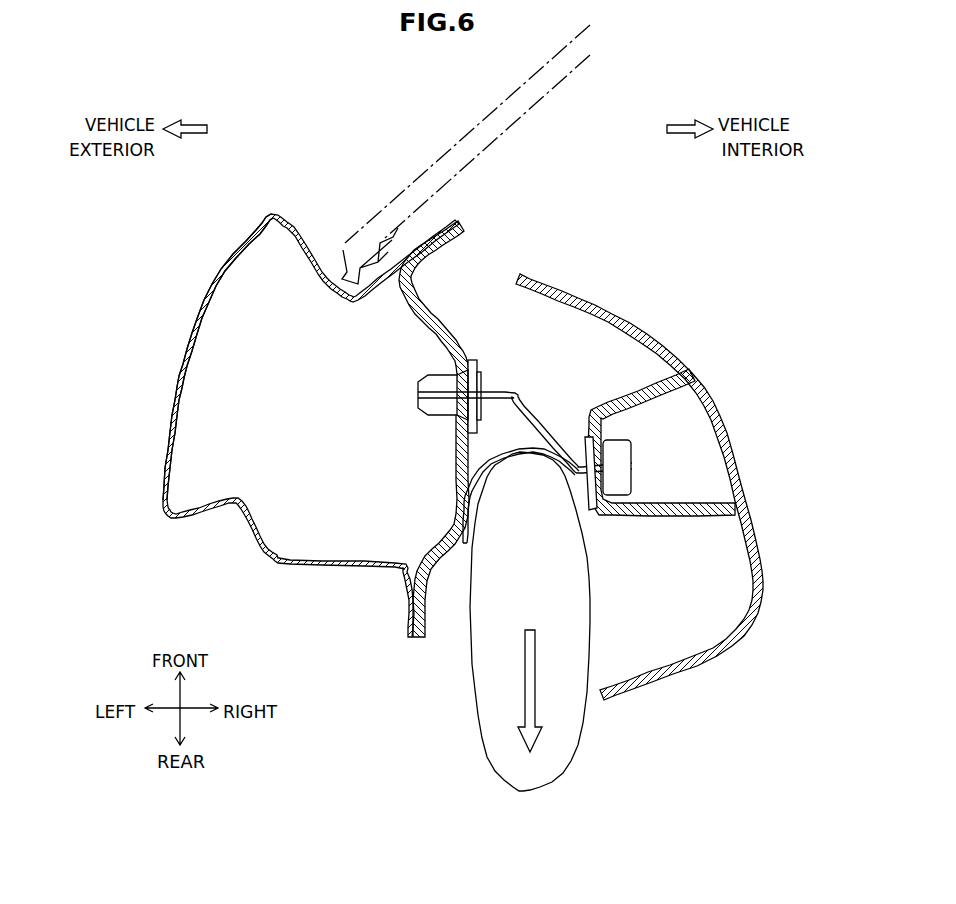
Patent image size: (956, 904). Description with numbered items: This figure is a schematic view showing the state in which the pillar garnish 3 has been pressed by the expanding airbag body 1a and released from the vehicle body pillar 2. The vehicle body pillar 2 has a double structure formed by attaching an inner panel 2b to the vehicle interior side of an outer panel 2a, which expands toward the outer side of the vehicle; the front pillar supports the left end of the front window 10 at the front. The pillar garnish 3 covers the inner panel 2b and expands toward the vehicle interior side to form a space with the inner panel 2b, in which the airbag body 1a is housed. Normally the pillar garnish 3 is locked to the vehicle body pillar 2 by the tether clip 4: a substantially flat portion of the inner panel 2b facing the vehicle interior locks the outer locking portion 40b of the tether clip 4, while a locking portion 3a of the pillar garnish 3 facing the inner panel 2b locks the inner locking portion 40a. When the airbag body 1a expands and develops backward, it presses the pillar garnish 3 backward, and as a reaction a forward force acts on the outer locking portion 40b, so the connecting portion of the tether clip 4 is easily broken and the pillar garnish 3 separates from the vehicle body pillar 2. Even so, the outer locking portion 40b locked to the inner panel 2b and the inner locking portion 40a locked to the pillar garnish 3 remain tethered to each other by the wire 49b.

The front window 10 is at (345, 243).
The vehicle body pillar 2 is at (113, 350).
The outer panel 2a is at (172, 410).
The inner panel 2b is at (453, 463).
The tether clip 4 is at (408, 371).
The outer locking portion 40b is at (431, 367).
The wire 49b is at (543, 410).
The airbag body 1a is at (485, 712).
The pillar garnish 3 is at (571, 292).
The locking portion 3a is at (642, 382).
The inner locking portion 40a is at (641, 458).